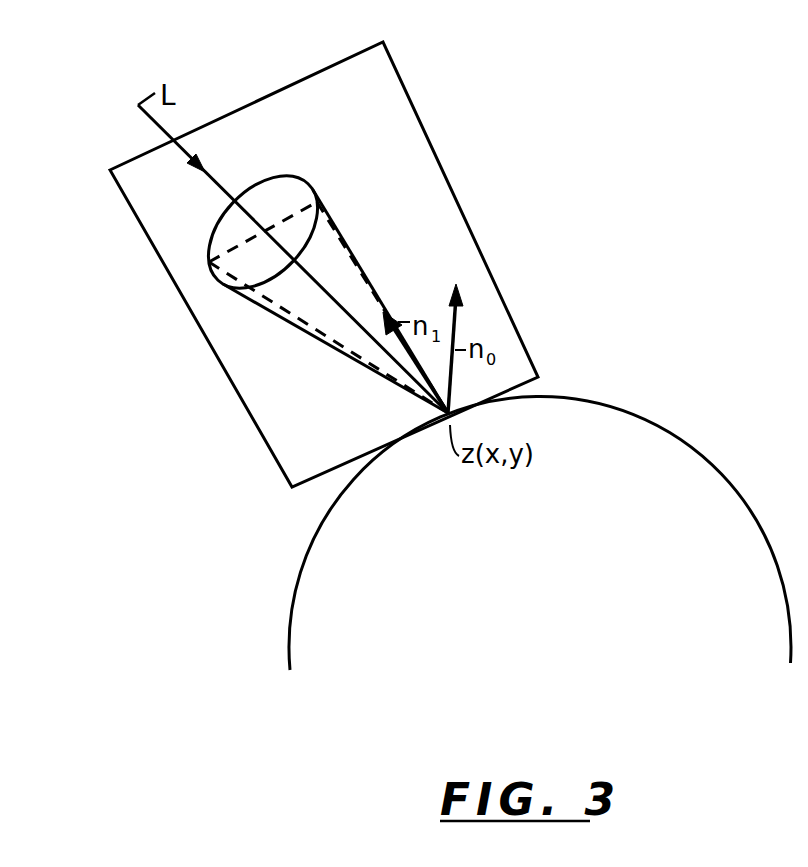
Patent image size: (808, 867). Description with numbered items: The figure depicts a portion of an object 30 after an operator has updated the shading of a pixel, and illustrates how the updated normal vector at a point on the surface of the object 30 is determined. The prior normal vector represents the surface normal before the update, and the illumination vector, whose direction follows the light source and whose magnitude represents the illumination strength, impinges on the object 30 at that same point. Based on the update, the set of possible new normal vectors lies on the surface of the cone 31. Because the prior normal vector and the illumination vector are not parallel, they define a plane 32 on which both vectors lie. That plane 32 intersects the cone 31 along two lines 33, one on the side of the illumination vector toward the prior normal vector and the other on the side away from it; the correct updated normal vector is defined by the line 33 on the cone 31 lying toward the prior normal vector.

The object 30 is at (287, 612).
The cone 31 is at (320, 202).
The plane 32 is at (480, 243).
The lines 33 is at (352, 248).